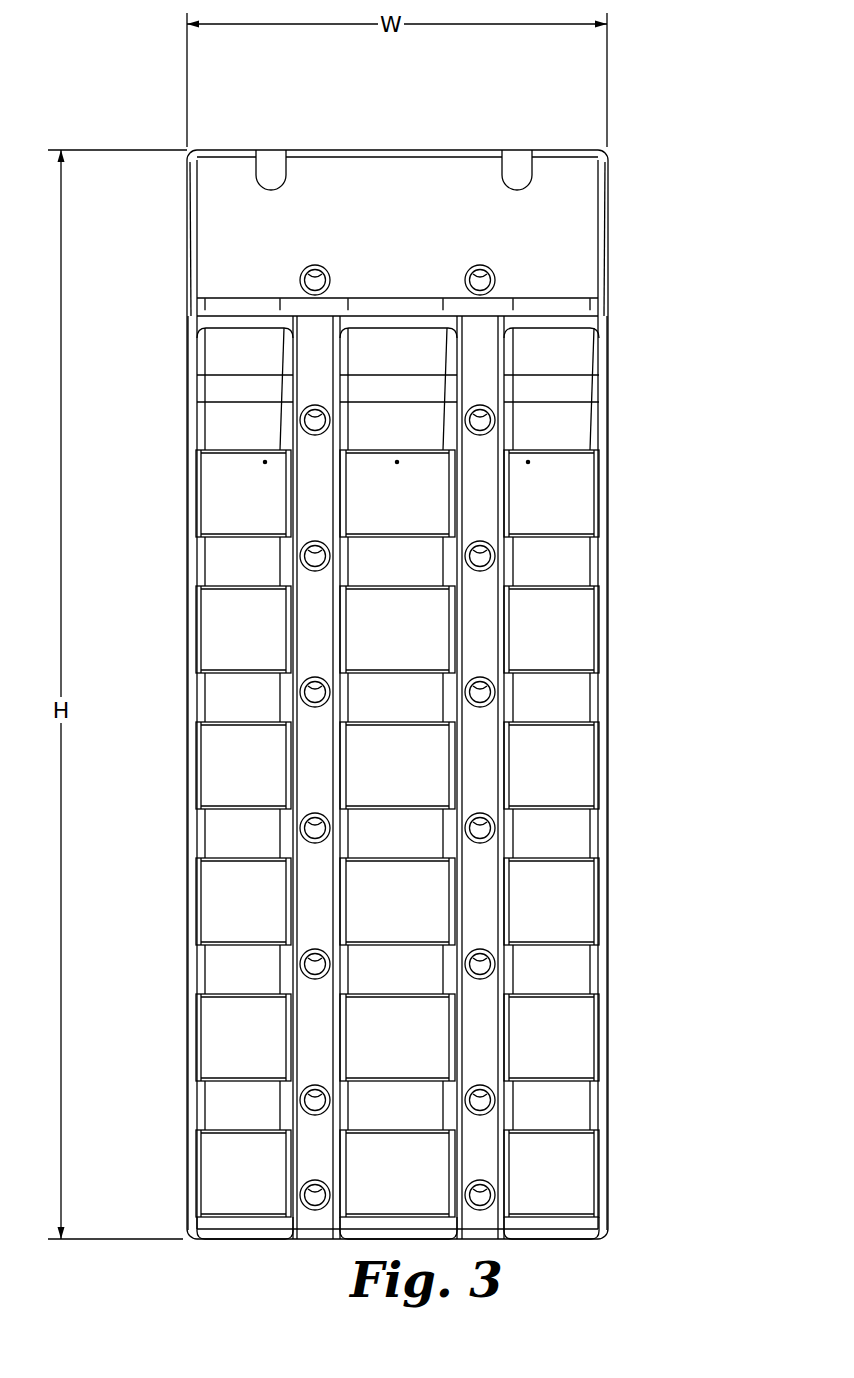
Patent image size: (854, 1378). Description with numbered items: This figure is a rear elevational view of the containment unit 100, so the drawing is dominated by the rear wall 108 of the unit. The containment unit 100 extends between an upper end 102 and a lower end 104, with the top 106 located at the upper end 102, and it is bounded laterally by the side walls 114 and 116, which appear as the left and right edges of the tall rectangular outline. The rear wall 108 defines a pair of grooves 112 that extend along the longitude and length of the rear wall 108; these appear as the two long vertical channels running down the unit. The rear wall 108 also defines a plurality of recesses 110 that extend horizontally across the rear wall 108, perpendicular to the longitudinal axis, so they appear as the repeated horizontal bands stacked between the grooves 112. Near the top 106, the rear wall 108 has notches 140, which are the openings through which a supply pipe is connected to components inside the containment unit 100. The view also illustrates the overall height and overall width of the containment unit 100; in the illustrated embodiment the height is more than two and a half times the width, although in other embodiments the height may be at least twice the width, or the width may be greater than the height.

The containment unit 100 is at (178, 118).
The upper end 102 is at (567, 117).
The lower end 104 is at (569, 1256).
The top 106 is at (440, 150).
The rear wall 108 is at (385, 888).
The recesses 110 is at (570, 508).
The grooves 112 is at (313, 1053).
The side wall 114 is at (187, 623).
The side wall 116 is at (610, 622).
The notches 140 is at (272, 157).